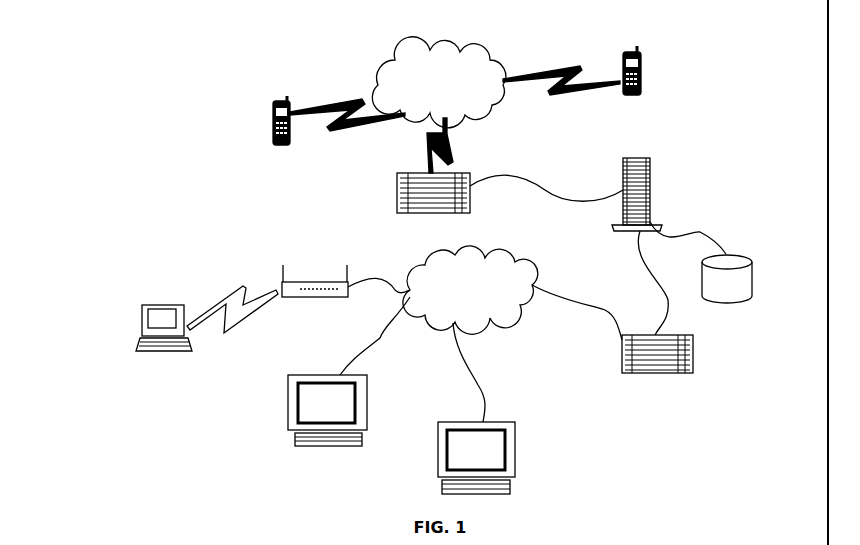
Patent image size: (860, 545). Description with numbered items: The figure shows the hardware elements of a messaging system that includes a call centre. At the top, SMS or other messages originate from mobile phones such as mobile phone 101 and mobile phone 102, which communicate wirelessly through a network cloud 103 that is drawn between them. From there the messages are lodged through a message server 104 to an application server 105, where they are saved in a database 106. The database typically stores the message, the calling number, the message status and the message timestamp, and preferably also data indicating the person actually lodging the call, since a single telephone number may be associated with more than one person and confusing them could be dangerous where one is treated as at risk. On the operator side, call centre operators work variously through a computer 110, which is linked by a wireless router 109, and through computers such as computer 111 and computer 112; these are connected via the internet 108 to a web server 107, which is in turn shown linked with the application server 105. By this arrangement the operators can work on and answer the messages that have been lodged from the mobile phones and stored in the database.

The mobile phone 101 is at (265, 120).
The mobile phone 102 is at (655, 72).
The wireless network cloud 103 is at (480, 56).
The message server 104 is at (397, 196).
The application server 105 is at (653, 165).
The database 106 is at (740, 252).
The web server 107 is at (693, 355).
The internet 108 is at (450, 270).
The wireless router 109 is at (300, 272).
The computer 110 is at (140, 317).
The computer 111 is at (288, 420).
The computer 112 is at (518, 448).